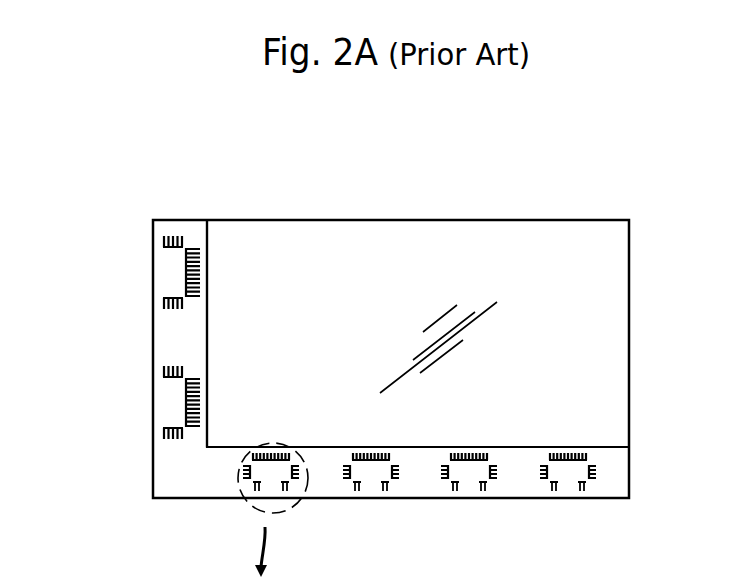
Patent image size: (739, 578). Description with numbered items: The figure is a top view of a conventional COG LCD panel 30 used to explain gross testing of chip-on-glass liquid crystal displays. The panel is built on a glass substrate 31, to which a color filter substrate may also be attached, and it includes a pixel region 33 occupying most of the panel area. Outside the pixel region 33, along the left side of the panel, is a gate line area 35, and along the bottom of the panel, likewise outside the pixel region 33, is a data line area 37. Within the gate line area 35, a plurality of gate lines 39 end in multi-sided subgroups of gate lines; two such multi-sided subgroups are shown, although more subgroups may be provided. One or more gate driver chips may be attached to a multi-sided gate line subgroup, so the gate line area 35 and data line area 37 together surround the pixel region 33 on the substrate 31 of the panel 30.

The COG LCD panel 30 is at (218, 192).
The substrate 31 is at (152, 313).
The pixel region 33 is at (432, 250).
The gate line area 35 is at (166, 345).
The data line area 37 is at (425, 487).
The gate lines 39 is at (165, 432).